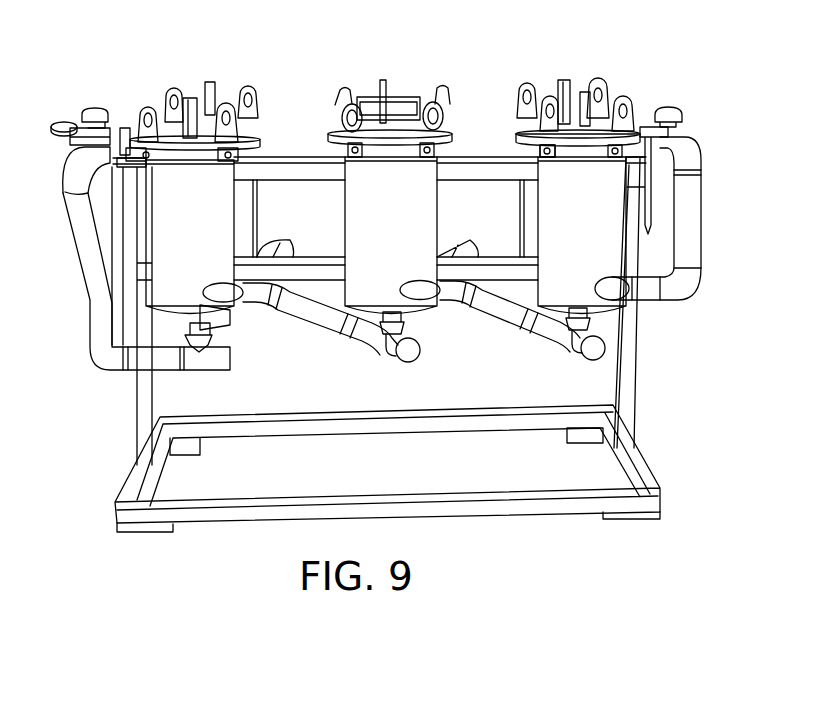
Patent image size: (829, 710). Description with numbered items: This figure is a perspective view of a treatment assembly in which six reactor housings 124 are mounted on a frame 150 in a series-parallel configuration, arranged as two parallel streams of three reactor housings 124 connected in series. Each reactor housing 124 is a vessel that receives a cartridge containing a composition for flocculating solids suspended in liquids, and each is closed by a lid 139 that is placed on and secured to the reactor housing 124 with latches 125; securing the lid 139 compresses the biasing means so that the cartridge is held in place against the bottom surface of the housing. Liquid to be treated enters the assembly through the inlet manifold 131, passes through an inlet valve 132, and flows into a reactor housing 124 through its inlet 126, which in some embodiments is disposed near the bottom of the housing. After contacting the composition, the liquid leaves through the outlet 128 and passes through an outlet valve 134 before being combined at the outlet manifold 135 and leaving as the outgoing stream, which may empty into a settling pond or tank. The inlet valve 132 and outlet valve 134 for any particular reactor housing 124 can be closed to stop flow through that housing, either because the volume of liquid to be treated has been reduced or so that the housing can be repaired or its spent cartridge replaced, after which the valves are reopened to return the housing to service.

The reactor housing 124 is at (223, 202).
The latches 125 is at (612, 147).
The inlet 126 is at (260, 297).
The outlet 128 is at (202, 369).
The inlet manifold 131 is at (668, 128).
The inlet valves 132 is at (670, 107).
The outlet valves 134 is at (100, 112).
The outlet manifold 135 is at (83, 128).
The lid 139 is at (590, 148).
The frame 150 is at (658, 476).